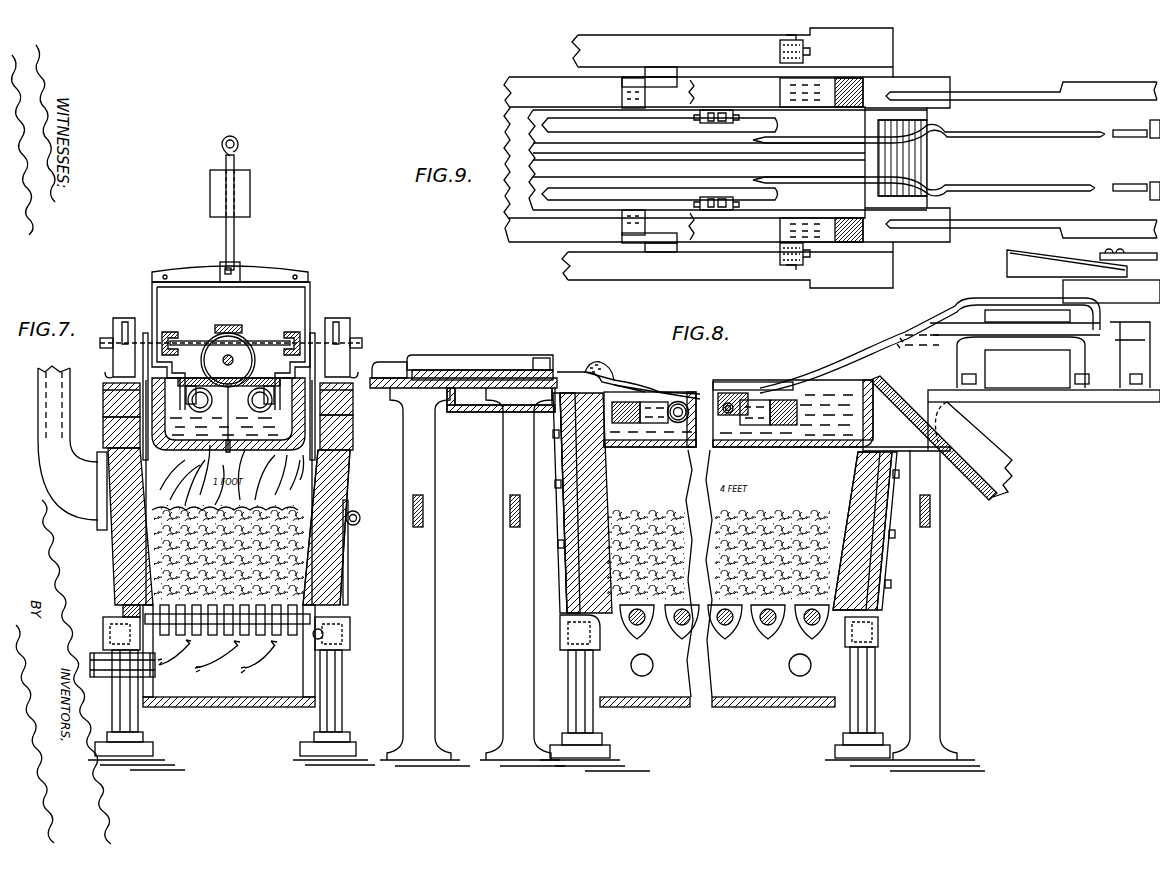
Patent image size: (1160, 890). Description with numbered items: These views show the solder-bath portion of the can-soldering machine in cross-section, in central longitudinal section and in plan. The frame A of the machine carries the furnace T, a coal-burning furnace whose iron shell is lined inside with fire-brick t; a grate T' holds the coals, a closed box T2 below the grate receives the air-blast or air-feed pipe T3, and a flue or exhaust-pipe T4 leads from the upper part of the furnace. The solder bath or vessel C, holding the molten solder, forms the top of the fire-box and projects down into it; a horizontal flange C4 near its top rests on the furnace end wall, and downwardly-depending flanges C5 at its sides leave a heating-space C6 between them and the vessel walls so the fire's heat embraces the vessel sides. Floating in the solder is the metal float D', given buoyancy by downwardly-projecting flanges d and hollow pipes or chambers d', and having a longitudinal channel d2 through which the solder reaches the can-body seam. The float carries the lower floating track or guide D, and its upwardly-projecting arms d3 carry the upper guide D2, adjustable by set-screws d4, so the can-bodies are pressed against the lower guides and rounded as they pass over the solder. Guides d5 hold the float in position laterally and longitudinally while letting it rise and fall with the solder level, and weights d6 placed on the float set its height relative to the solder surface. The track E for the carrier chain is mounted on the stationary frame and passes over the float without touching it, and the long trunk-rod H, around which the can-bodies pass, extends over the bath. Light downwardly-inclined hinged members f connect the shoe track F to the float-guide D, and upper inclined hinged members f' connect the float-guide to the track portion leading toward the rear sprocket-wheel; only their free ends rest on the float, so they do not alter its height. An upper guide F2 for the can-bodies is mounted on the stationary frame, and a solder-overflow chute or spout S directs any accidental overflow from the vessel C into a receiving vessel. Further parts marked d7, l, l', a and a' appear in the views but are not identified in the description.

In FIG. 7, the weights d6 is at (250, 186).
In FIG. 7, the set-screws d4 is at (240, 264).
In FIG. 7, the upwardly-projecting arms d3 is at (312, 293).
In FIG. 9, the upwardly-projecting arms d3 is at (633, 237).
In FIG. 7, the guides d5 is at (318, 332).
In FIG. 9, the guides d5 is at (657, 245).
In FIG. 7, the track or guide for the can-body carrier E is at (170, 328).
In FIG. 9, the track or guide for the can-body carrier E is at (822, 233).
In FIG. 7, the upper guide D2 is at (242, 334).
In FIG. 7, the trunk-rod H is at (233, 357).
In FIG. 7, the downwardly-depending flanges C5 is at (322, 418).
In FIG. 7, the heating-space C6 is at (330, 440).
In FIG. 7, the downwardly-projecting flanges d is at (200, 415).
In FIG. 7, the hollow pipes or chambers d' is at (259, 415).
In FIG. 7, the rod d7 is at (233, 450).
In FIG. 7, the solder bath or vessel C is at (150, 478).
In FIG. 8, the solder bath or vessel C is at (835, 396).
In FIG. 9, the solder bath or vessel C is at (557, 236).
In FIG. 7, the flue or exhaust-pipe T4 is at (72, 448).
In FIG. 7, the lining plate l' is at (360, 552).
In FIG. 8, the lining plate l' is at (886, 531).
In FIG. 7, the furnace T is at (359, 527).
In FIG. 9, the furnace T is at (756, 165).
In FIG. 7, the fire-brick t is at (342, 590).
In FIG. 7, the grate T' is at (227, 640).
In FIG. 8, the grate T' is at (795, 614).
In FIG. 7, the closed box T2 is at (229, 711).
In FIG. 8, the closed box T2 is at (773, 687).
In FIG. 7, the air-blast or air-feed pipe T3 is at (105, 680).
In FIG. 8, the air-blast or air-feed pipe T3 is at (800, 677).
In FIG. 8, the frame A is at (682, 579).
In FIG. 8, the can-body guide or track F is at (568, 368).
In FIG. 8, the horizontal flange C4 is at (590, 372).
In FIG. 8, the hinged members or extensions f is at (656, 366).
In FIG. 8, the floating track or guide D is at (650, 397).
In FIG. 9, the floating track or guide D is at (675, 208).
In FIG. 8, the float D' is at (698, 397).
In FIG. 9, the float D' is at (685, 179).
In FIG. 8, the pipe a is at (663, 450).
In FIG. 8, the pipe a' is at (677, 448).
In FIG. 8, the longitudinal channel d2 is at (753, 400).
In FIG. 9, the longitudinal channel d2 is at (533, 157).
In FIG. 8, the upper inclined hinged members f' is at (930, 345).
In FIG. 9, the upper inclined hinged members f' is at (956, 160).
In FIG. 8, the wall l is at (865, 531).
In FIG. 8, the solder-overflow chute or spout S is at (992, 437).
In FIG. 9, the upper guide for the can-bodies F2 is at (1012, 259).